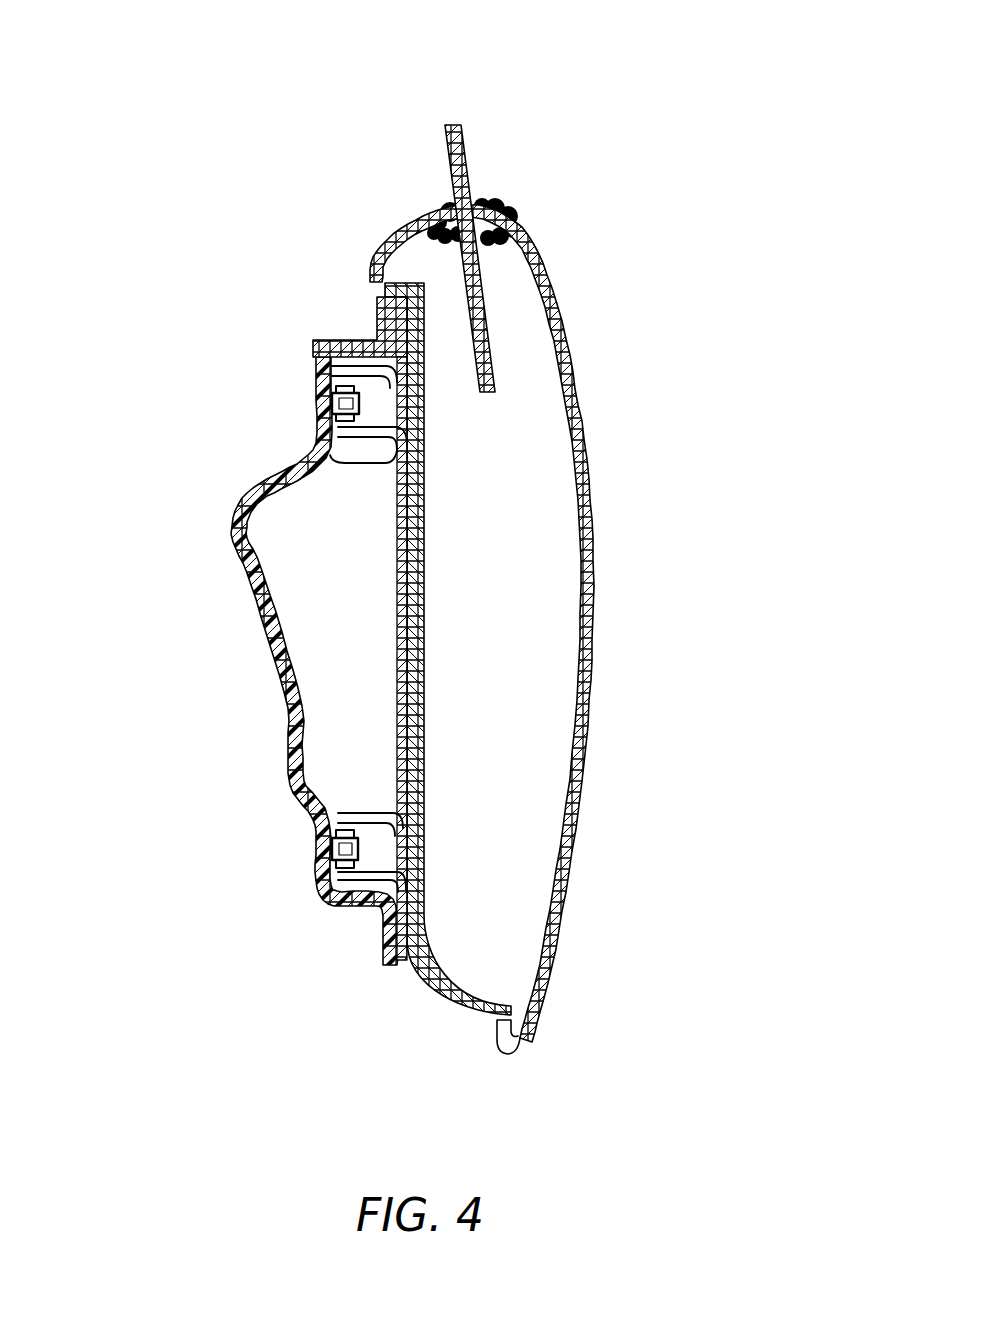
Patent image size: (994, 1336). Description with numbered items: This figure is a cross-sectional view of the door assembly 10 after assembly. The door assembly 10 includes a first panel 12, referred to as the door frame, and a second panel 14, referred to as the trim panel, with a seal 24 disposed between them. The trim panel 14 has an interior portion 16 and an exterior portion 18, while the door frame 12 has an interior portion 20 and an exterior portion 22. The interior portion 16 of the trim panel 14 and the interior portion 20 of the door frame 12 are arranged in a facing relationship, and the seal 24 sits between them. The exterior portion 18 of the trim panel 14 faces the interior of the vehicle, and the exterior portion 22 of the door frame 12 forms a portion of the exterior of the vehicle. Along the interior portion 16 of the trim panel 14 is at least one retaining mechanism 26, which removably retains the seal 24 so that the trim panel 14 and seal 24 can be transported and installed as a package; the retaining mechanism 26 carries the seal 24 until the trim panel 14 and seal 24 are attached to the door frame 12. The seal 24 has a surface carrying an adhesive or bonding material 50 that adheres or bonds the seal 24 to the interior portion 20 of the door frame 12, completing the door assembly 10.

The door assembly 10 is at (383, 527).
The first panel 12 is at (512, 626).
The second panel 14 is at (382, 582).
The interior portion 16 is at (397, 450).
The exterior portion 18 is at (233, 520).
The interior portion 20 is at (383, 248).
The exterior portion 22 is at (586, 403).
The seal 24 is at (394, 620).
The retaining mechanism 26 is at (363, 403).
The adhesive or bonding material 50 is at (418, 316).